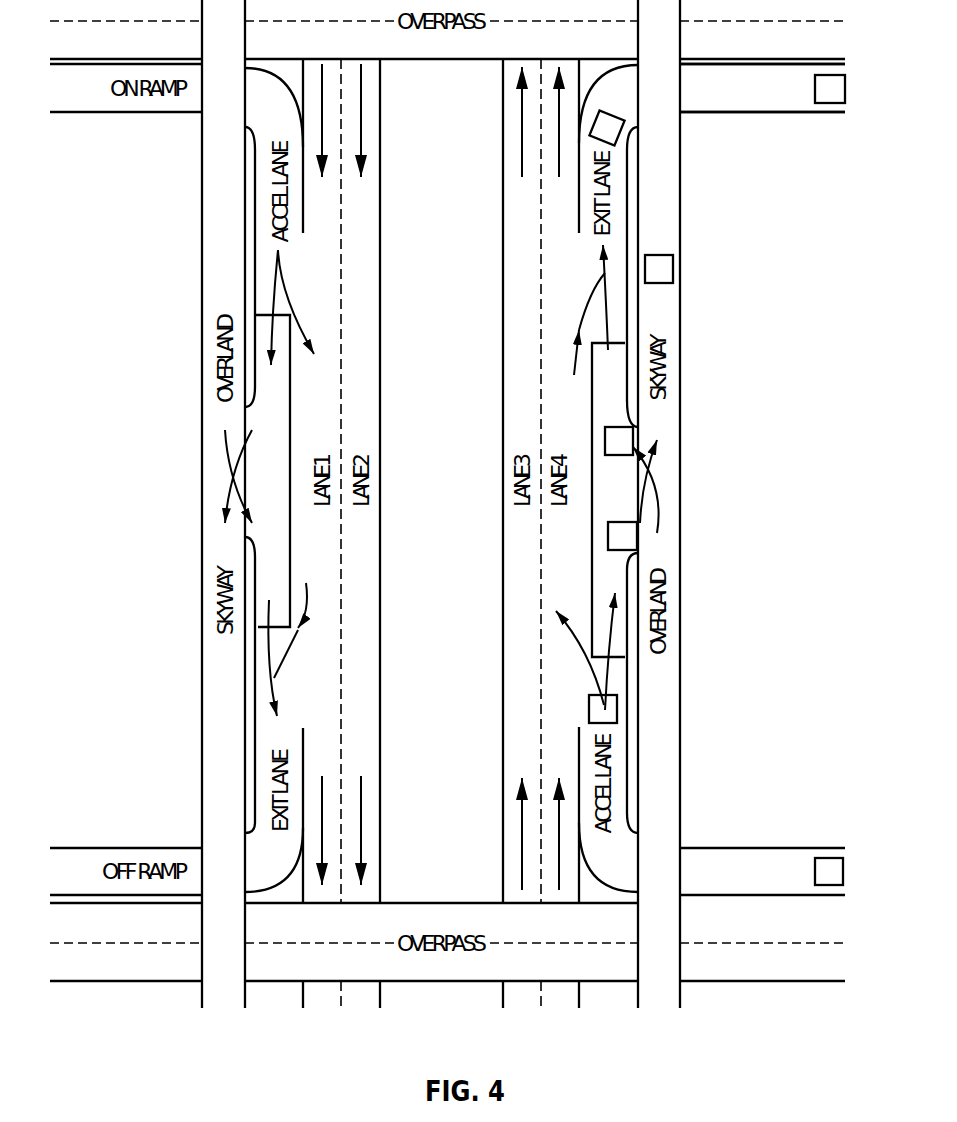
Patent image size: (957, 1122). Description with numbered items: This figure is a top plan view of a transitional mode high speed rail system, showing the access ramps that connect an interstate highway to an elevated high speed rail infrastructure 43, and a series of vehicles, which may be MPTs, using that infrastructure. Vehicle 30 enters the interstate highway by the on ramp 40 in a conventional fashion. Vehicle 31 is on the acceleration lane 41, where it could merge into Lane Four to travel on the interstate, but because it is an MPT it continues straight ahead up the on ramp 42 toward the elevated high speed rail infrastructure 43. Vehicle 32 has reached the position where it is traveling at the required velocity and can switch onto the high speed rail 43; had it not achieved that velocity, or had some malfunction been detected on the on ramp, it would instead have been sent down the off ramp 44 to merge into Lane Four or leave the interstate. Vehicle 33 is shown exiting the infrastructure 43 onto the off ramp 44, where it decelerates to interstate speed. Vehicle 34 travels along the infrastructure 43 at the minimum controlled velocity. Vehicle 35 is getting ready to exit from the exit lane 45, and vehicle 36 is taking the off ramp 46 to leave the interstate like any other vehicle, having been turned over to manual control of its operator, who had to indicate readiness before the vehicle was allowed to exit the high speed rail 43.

The vehicle 30 is at (846, 871).
The vehicle 31 is at (620, 708).
The vehicle 32 is at (640, 538).
The vehicle 33 is at (617, 425).
The vehicle 34 is at (657, 252).
The vehicle 35 is at (624, 136).
The vehicle 36 is at (847, 88).
The on ramp 40 is at (686, 884).
The acceleration lane 41 is at (606, 870).
The on ramp 42 is at (593, 584).
The elevated high speed rail infrastructure 43 is at (644, 138).
The off ramp 44 is at (594, 381).
The exit lane 45 is at (604, 105).
The off ramp 46 is at (686, 99).